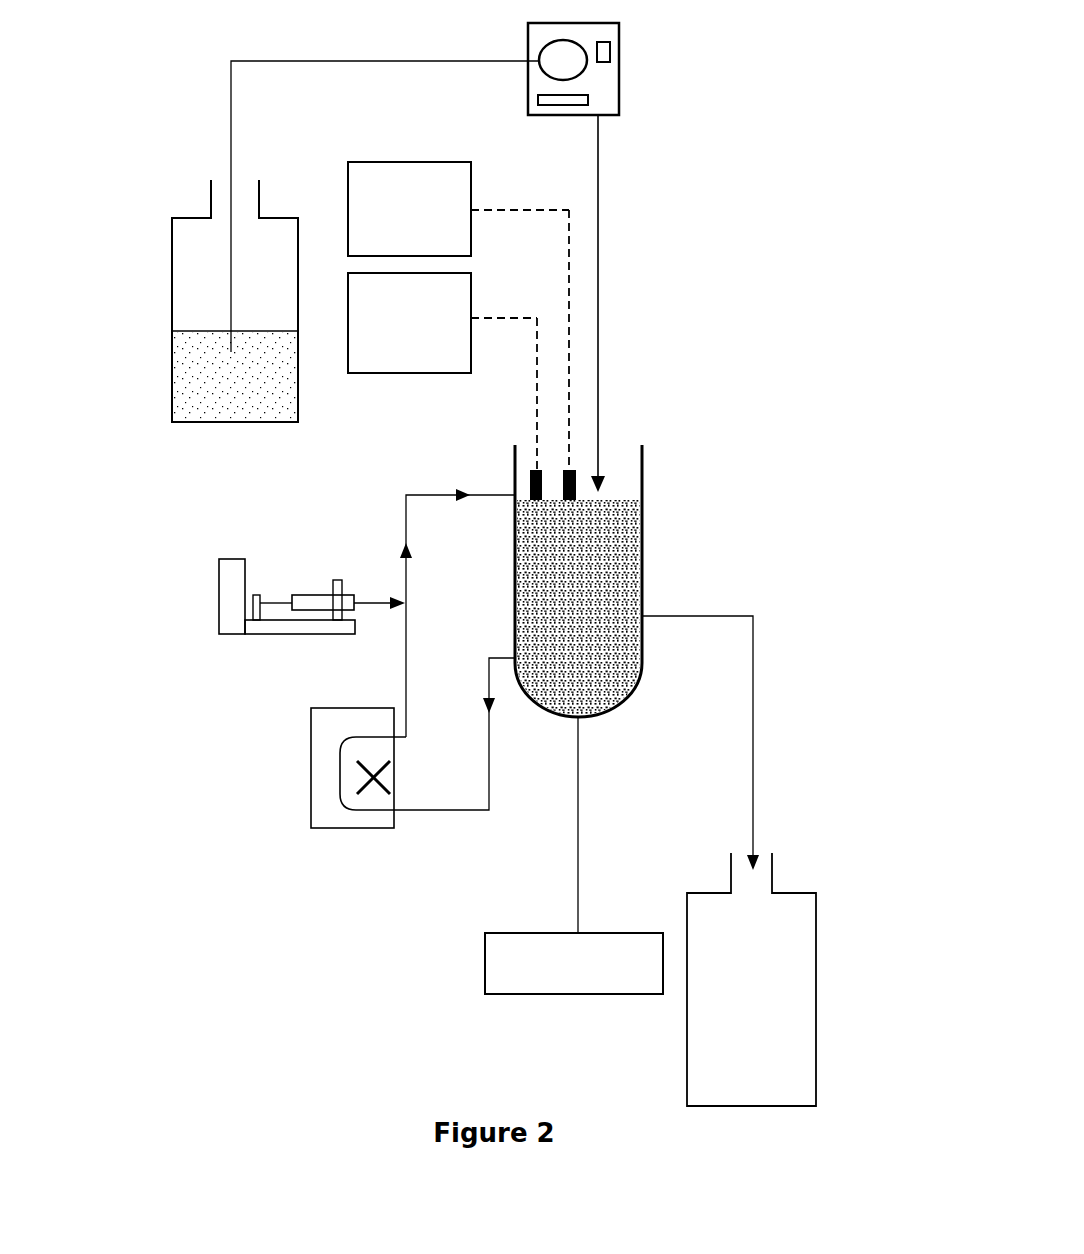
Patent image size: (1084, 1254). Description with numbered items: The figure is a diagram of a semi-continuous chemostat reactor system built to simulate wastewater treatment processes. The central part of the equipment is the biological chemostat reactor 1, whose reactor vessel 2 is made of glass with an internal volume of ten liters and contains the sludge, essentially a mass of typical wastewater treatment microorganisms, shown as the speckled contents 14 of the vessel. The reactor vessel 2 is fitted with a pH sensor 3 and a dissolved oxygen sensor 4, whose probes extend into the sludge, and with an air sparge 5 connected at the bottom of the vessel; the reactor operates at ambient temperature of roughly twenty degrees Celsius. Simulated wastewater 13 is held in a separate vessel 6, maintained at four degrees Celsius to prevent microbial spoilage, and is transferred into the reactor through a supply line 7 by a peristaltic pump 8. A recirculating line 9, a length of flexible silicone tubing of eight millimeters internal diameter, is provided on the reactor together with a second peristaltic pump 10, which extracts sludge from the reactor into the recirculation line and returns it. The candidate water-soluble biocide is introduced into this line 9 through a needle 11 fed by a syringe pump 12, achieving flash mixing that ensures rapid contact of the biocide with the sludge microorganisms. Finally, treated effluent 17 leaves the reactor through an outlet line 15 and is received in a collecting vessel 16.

The biological chemostat reactor 1 is at (812, 270).
The reactor vessel 2 is at (655, 531).
The pH sensor 3 is at (400, 200).
The dissolved oxygen sensor 4 is at (400, 312).
The air sparge 5 is at (565, 977).
The vessel 6 is at (152, 258).
The supply line 7 is at (212, 117).
The peristaltic pump 8 is at (640, 61).
The recirculating line 9 is at (436, 824).
The peristaltic pump 10 is at (311, 775).
The needle 11 is at (360, 580).
The syringe pump 12 is at (206, 576).
The simulated wastewater 13 is at (190, 377).
The reaction medium 14 is at (620, 576).
The outlet line 15 is at (778, 715).
The collecting vessel 16 is at (840, 934).
The treated effluent 17 is at (780, 1054).